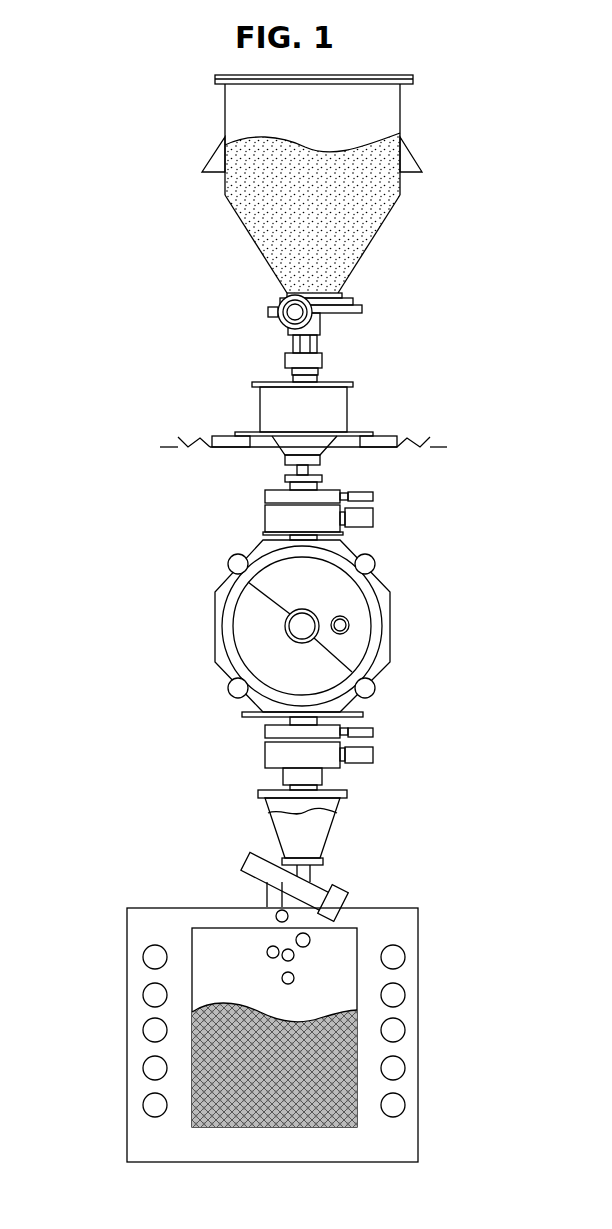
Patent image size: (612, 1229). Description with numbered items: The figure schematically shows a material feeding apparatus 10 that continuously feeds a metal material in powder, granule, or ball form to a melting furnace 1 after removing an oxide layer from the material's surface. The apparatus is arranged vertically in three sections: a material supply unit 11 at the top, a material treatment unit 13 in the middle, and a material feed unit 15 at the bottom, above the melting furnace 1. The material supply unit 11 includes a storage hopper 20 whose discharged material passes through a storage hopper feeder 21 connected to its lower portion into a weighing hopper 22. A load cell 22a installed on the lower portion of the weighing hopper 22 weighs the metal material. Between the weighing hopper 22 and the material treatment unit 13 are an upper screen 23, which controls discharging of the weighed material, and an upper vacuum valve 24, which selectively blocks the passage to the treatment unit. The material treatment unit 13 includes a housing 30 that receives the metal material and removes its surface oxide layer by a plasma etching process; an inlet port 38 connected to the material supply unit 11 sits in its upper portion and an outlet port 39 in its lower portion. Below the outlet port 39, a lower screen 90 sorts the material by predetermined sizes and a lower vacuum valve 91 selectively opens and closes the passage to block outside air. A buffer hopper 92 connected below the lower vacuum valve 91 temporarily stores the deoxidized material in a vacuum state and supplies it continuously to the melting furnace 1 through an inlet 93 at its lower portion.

The melting furnace 1 is at (418, 1030).
The material feeding apparatus 10 is at (112, 254).
The material supply unit 11 is at (465, 480).
The material treatment unit 13 is at (465, 717).
The material feed unit 15 is at (465, 720).
The storage hopper 20 is at (228, 184).
The storage hopper feeder 21 is at (268, 308).
The weighing hopper 22 is at (262, 402).
The load cell 22a is at (387, 441).
The upper screen 23 is at (265, 495).
The upper vacuum valve 24 is at (265, 516).
The housing 30 is at (215, 625).
The inlet port 38 is at (318, 535).
The outlet port 39 is at (317, 720).
The lower screen 90 is at (265, 733).
The lower vacuum valve 91 is at (265, 757).
The buffer hopper 92 is at (280, 830).
The inlet 93 is at (312, 881).